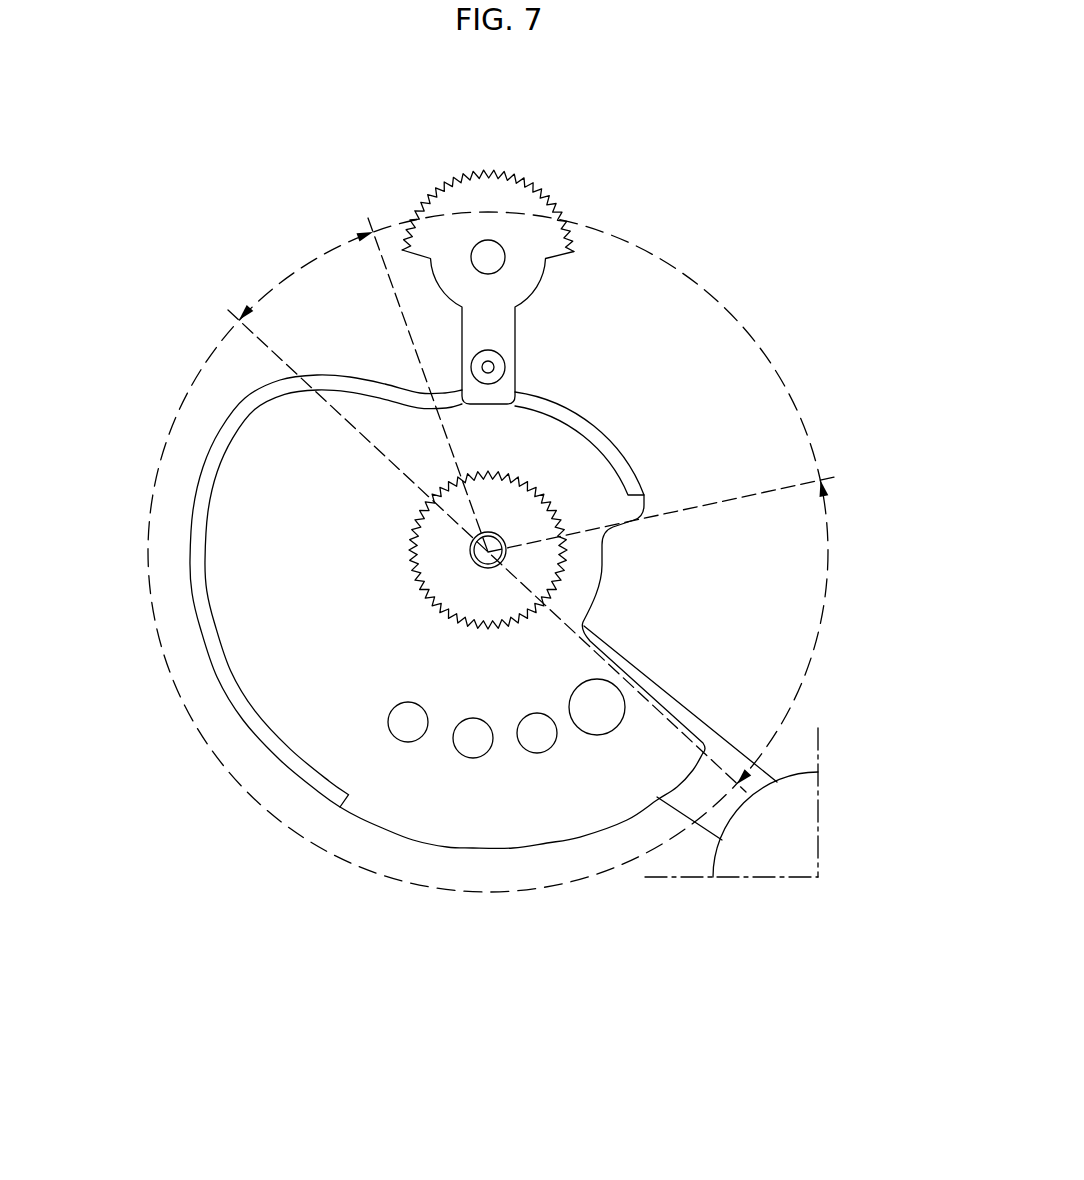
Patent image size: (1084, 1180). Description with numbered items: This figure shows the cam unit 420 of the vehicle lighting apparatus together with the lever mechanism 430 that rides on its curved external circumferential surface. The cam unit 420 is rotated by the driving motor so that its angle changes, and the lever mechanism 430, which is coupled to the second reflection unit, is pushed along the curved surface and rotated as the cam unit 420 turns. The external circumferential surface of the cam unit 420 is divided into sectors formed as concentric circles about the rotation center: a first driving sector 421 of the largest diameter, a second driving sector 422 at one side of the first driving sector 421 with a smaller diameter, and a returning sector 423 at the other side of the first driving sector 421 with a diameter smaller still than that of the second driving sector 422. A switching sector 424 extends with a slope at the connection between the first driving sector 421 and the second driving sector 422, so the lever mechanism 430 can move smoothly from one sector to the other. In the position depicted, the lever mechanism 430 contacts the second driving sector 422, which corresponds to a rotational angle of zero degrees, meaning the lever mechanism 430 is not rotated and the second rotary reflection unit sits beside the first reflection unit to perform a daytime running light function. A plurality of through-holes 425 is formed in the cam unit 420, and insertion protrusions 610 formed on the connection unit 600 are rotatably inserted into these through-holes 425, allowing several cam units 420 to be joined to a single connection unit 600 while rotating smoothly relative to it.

The cam unit 420 is at (268, 687).
The first driving sector 421 is at (352, 865).
The second driving sector 422 is at (782, 372).
The returning sector 423 is at (812, 662).
The switching sector 424 is at (290, 270).
The through-holes 425 is at (413, 723).
The lever mechanism 430 is at (493, 333).
The connection unit 600 is at (690, 792).
The insertion protrusions 610 is at (595, 708).